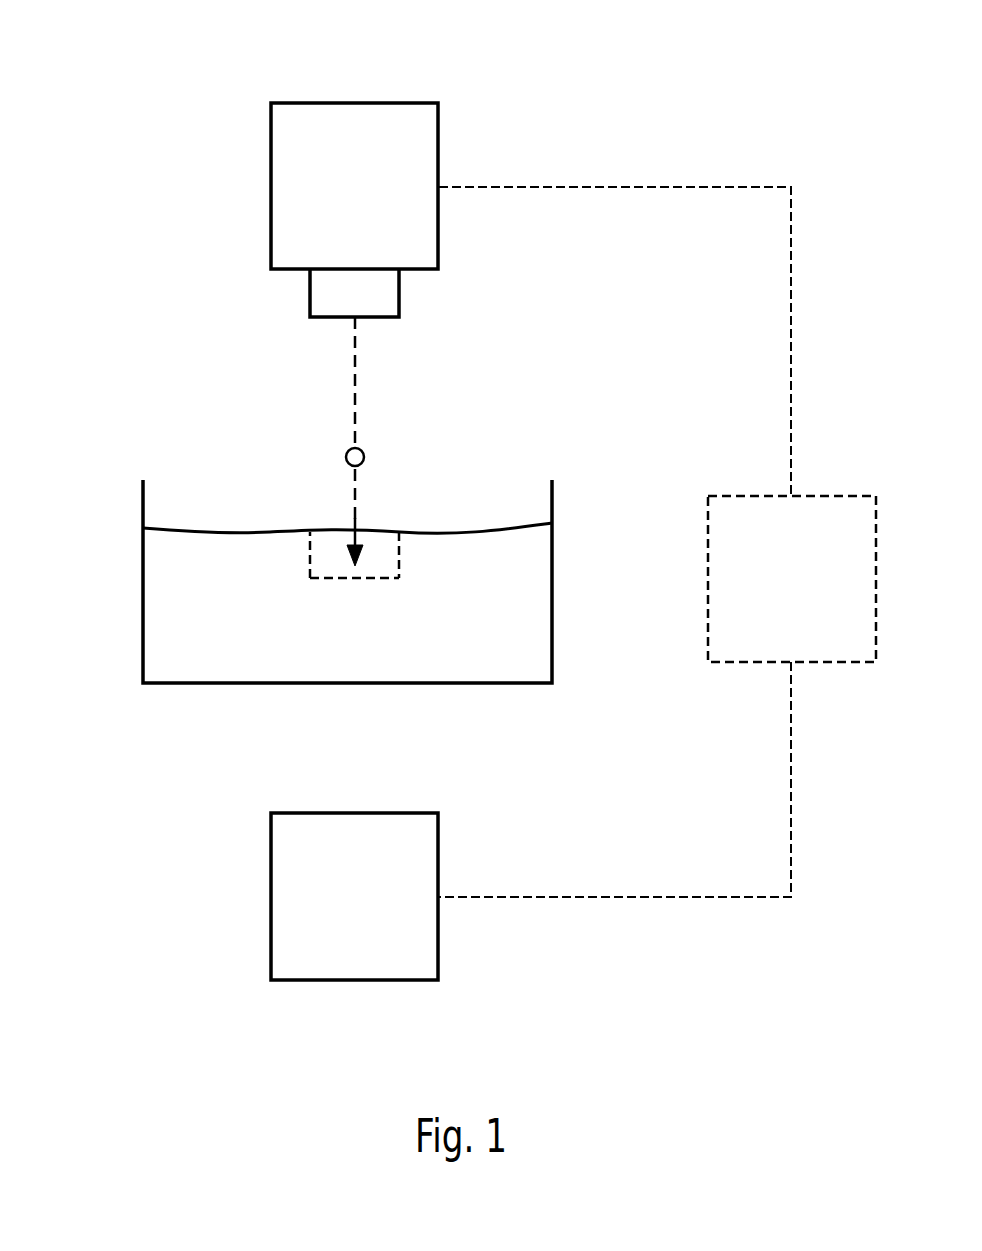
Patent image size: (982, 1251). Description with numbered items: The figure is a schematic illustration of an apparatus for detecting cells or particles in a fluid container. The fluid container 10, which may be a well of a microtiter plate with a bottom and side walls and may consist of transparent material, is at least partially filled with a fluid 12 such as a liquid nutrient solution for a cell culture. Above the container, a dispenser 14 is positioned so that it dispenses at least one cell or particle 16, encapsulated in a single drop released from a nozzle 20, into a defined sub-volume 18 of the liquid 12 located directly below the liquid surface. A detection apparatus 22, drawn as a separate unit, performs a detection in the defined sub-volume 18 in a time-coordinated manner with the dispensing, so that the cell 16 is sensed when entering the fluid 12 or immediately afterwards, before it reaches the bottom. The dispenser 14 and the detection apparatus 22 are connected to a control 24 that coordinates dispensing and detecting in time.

The fluid container 10 is at (143, 603).
The fluid 12 is at (497, 523).
The dispenser 14 is at (357, 103).
The cell or particle 16 is at (346, 458).
The defined sub-volume 18 is at (360, 580).
The nozzle / optics 20 is at (309, 295).
The detection apparatus 22 is at (357, 980).
The control 24 is at (708, 581).